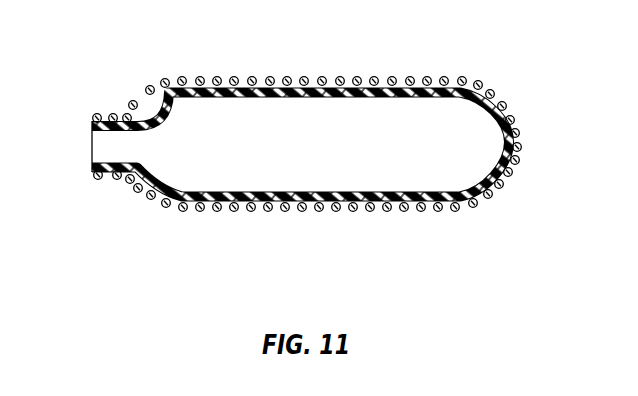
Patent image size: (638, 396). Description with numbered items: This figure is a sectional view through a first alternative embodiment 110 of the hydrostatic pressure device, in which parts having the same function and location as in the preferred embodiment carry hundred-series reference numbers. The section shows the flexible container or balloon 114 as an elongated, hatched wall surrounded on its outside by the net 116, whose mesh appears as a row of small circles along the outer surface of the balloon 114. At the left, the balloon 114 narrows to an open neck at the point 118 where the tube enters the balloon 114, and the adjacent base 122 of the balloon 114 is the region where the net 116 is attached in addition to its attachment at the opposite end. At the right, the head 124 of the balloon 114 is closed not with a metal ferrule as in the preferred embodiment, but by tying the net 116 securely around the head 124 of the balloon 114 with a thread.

The first alternative embodiment 110 is at (418, 53).
The balloon 114 is at (262, 206).
The net 116 is at (490, 198).
The point where tube enters balloon 118 is at (89, 163).
The base of balloon 122 is at (137, 183).
The head of balloon 124 is at (513, 160).